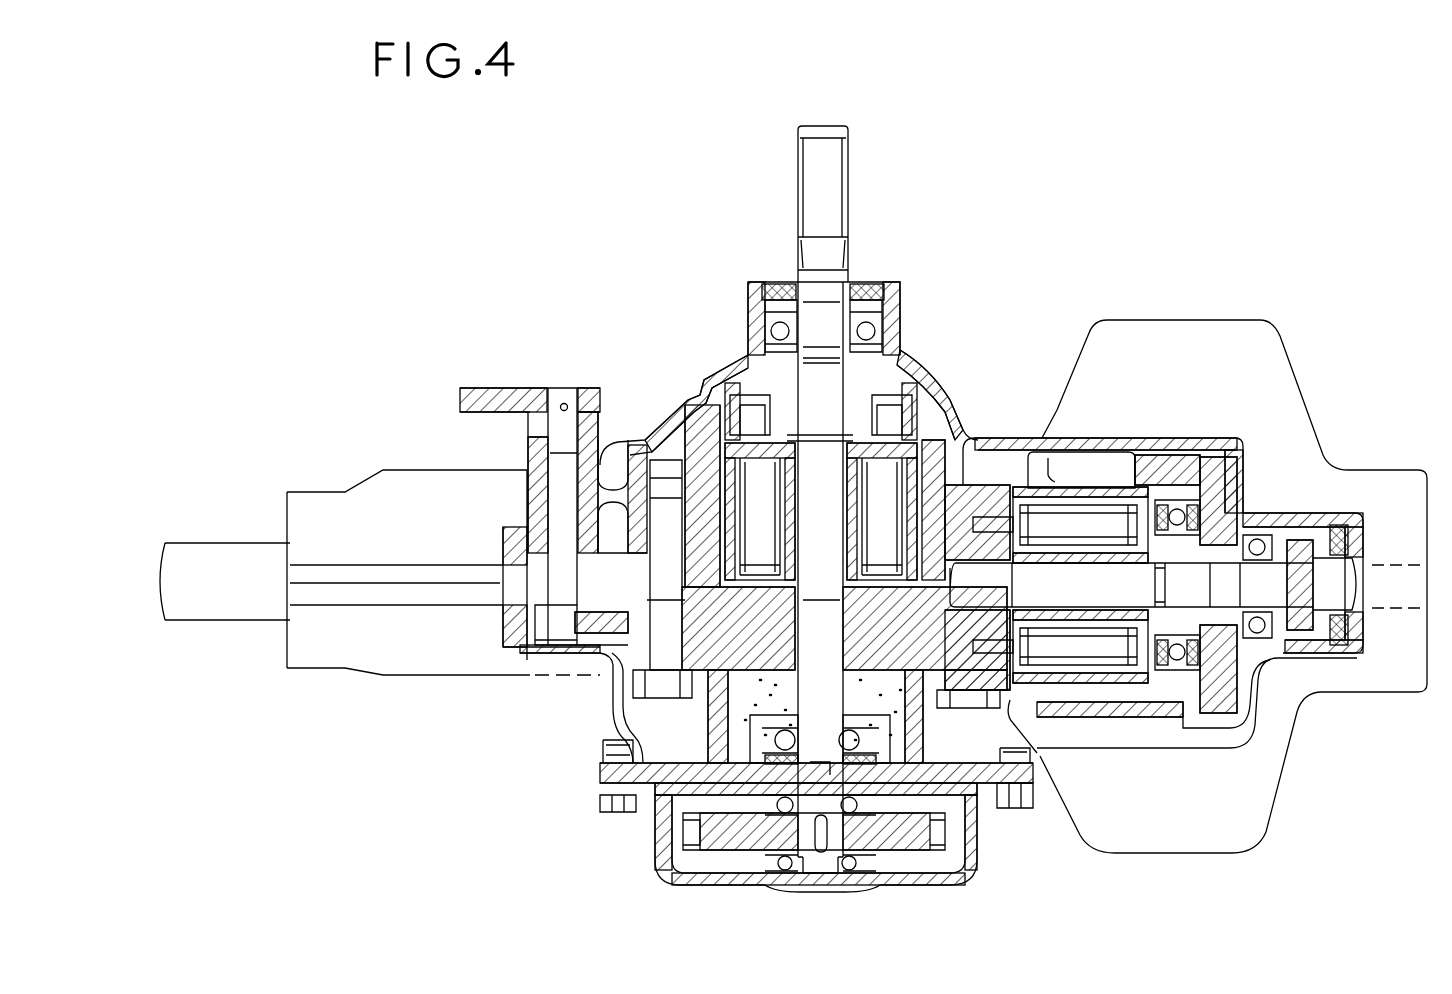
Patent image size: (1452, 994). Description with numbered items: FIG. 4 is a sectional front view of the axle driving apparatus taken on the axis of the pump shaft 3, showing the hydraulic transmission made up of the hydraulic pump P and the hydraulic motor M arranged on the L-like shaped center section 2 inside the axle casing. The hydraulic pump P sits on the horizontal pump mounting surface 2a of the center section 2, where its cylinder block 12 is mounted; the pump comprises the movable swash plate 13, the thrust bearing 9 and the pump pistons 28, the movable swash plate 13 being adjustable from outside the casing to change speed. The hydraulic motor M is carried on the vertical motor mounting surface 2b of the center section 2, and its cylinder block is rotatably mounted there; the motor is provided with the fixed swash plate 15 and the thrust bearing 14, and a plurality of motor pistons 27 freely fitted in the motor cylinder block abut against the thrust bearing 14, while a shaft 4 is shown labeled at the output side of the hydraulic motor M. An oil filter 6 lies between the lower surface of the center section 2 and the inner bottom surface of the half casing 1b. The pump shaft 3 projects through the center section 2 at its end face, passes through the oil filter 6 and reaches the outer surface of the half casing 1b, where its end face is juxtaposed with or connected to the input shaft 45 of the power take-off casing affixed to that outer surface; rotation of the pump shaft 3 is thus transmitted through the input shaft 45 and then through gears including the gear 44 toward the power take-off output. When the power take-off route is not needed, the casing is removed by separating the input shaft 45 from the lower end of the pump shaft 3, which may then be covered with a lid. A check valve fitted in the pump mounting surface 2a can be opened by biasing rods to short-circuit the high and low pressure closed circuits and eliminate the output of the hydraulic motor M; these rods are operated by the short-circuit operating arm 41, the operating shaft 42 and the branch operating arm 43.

The half casing 1b is at (605, 732).
The center section 2 is at (768, 642).
The pump mounting surface 2a is at (712, 722).
The motor mounting surface 2b is at (900, 372).
The pump shaft 3 is at (833, 190).
The motor output shaft 4 is at (1345, 572).
The oil filter 6 is at (910, 723).
The thrust bearing 9 is at (862, 420).
The cylinder block 12 is at (935, 522).
The movable swash plate 13 is at (920, 403).
The thrust bearing 14 is at (1212, 524).
The fixed swash plate 15 is at (1237, 458).
The motor pistons 27 is at (1130, 462).
The pump pistons 28 is at (905, 452).
The short-circuit operating arm 41 is at (522, 388).
The operating shaft 42 is at (565, 437).
The branch operating arm 43 is at (580, 600).
The gear 44 is at (990, 878).
The input shaft 45 is at (655, 862).
The hydraulic pump P is at (690, 360).
The hydraulic motor M is at (1171, 420).